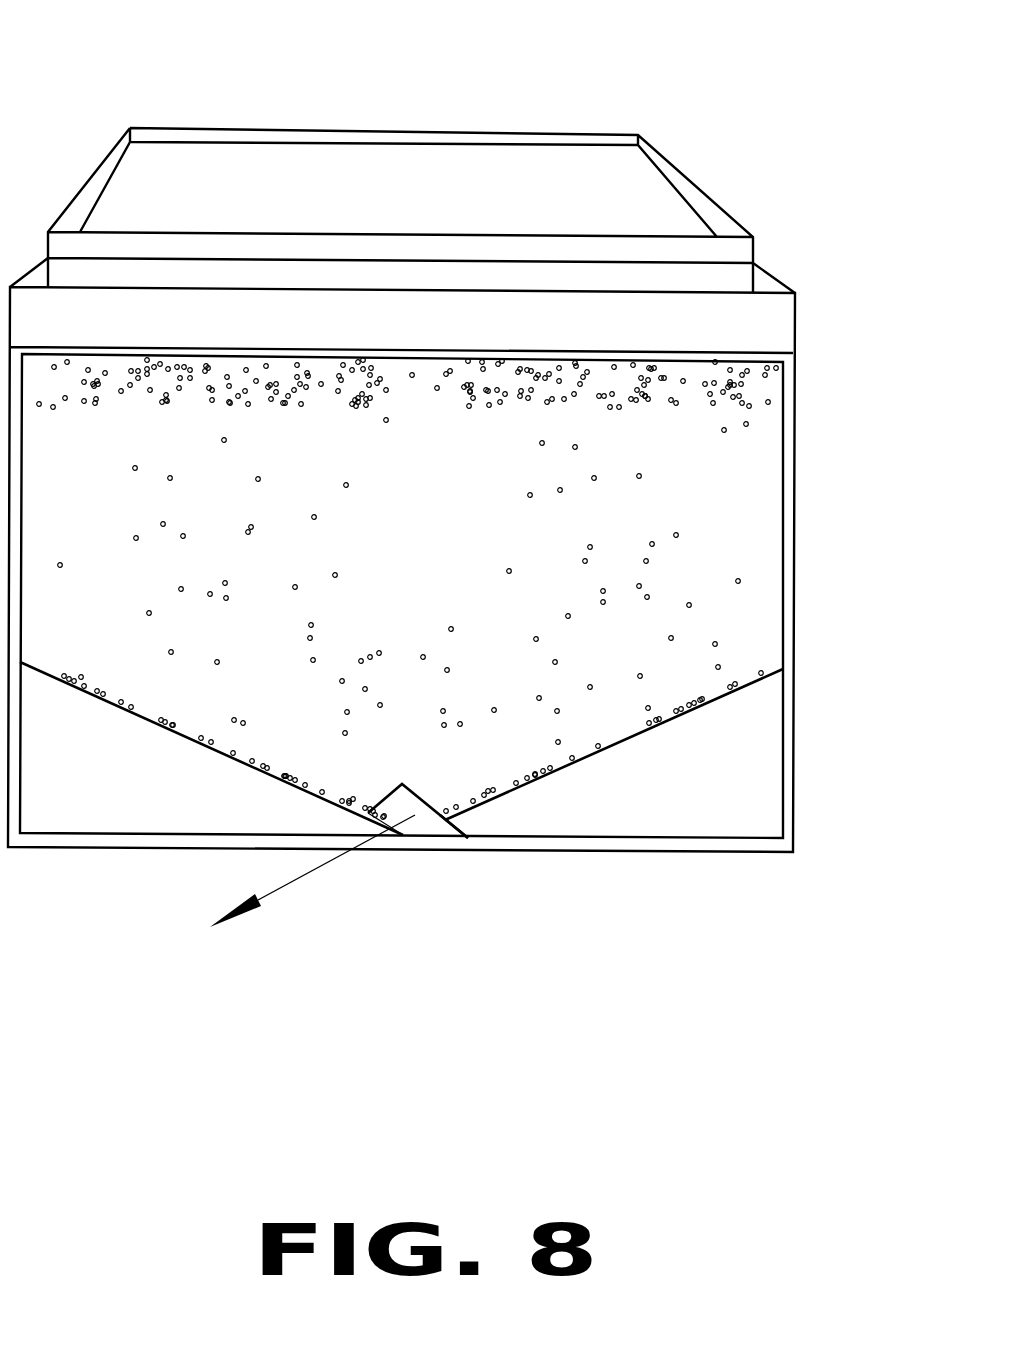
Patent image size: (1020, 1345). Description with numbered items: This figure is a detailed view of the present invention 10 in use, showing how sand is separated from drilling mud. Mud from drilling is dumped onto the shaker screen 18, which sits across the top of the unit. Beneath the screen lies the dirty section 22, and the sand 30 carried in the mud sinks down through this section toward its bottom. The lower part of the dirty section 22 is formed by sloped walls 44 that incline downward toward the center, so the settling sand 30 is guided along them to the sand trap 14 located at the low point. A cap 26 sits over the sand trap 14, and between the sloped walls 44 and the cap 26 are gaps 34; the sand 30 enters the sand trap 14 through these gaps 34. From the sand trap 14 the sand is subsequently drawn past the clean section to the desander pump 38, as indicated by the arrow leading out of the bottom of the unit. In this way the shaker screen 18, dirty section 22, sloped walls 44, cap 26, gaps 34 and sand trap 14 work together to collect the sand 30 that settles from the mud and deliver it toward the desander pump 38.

The present invention 10 is at (756, 157).
The shaker screen 18 is at (410, 225).
The dirty section 22 is at (793, 510).
The sand 30 is at (363, 456).
The sand trap 14 is at (352, 756).
The cap 26 is at (415, 783).
The gaps 34 is at (468, 838).
The desander pump 38 is at (197, 988).
The sloped walls 44 is at (165, 733).